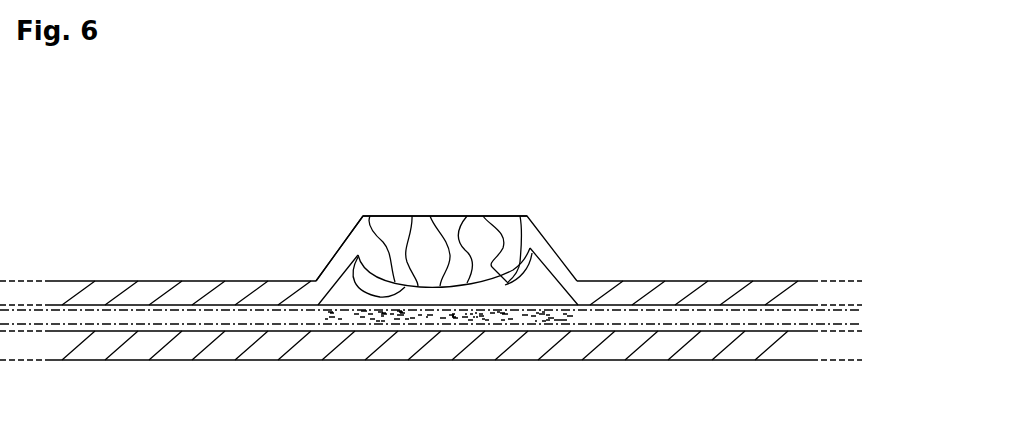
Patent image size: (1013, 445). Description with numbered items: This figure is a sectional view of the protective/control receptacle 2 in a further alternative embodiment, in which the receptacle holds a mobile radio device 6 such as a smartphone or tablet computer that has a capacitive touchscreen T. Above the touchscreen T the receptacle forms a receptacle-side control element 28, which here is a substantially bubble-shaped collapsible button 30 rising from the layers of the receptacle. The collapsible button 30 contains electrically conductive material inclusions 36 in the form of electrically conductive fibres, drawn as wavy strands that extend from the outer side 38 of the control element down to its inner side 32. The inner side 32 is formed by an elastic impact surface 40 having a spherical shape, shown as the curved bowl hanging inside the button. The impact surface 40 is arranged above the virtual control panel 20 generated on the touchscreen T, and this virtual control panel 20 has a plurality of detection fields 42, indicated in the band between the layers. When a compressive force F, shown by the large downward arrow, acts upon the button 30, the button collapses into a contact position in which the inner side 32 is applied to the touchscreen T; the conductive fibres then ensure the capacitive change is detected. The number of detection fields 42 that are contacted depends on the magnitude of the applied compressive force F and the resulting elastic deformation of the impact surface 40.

The protective/control receptacle 2 is at (431, 244).
The mobile radio device 6 is at (668, 331).
The virtual control panel 20 is at (341, 314).
The control element 28 is at (429, 273).
The collapsible button 30 is at (533, 247).
The inner side 32 is at (366, 216).
The electrically conductive material inclusions 36 is at (412, 216).
The outer side 38 is at (468, 206).
The elastic impact surface 40 is at (560, 258).
The detection fields 42 is at (407, 290).
The touchscreen T is at (619, 295).
The compressive force F is at (432, 177).